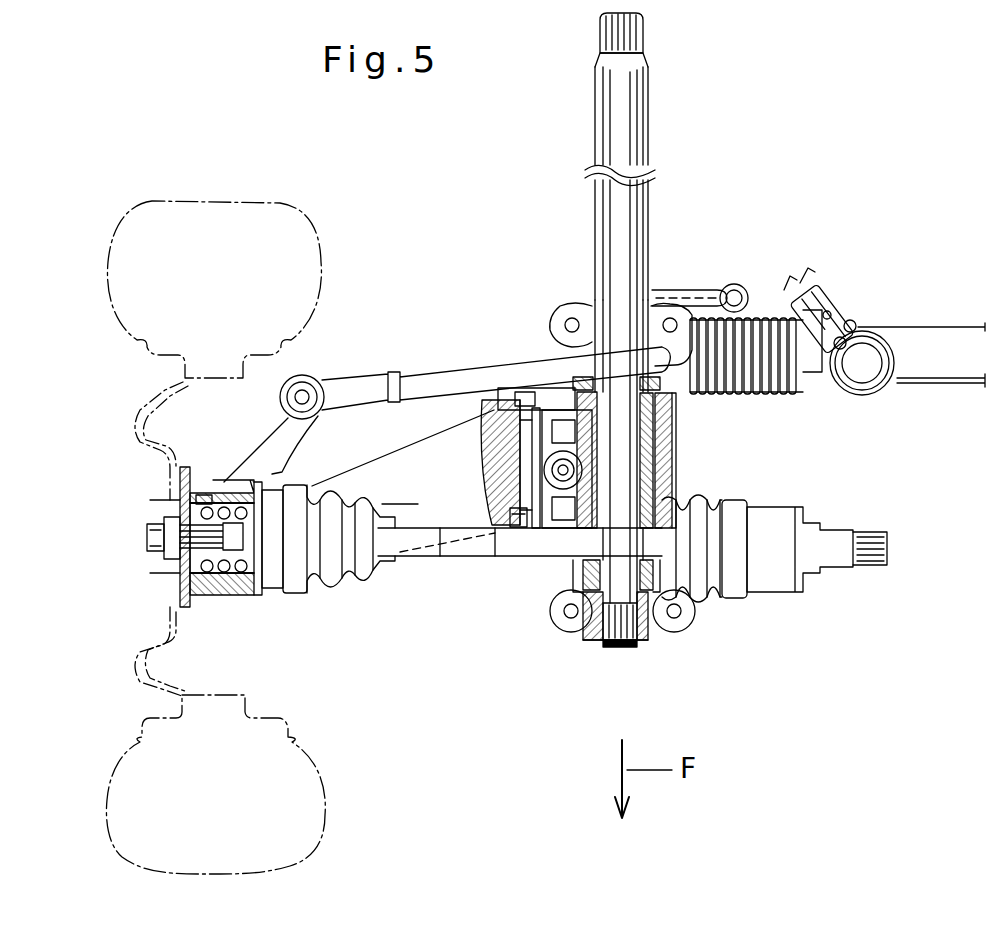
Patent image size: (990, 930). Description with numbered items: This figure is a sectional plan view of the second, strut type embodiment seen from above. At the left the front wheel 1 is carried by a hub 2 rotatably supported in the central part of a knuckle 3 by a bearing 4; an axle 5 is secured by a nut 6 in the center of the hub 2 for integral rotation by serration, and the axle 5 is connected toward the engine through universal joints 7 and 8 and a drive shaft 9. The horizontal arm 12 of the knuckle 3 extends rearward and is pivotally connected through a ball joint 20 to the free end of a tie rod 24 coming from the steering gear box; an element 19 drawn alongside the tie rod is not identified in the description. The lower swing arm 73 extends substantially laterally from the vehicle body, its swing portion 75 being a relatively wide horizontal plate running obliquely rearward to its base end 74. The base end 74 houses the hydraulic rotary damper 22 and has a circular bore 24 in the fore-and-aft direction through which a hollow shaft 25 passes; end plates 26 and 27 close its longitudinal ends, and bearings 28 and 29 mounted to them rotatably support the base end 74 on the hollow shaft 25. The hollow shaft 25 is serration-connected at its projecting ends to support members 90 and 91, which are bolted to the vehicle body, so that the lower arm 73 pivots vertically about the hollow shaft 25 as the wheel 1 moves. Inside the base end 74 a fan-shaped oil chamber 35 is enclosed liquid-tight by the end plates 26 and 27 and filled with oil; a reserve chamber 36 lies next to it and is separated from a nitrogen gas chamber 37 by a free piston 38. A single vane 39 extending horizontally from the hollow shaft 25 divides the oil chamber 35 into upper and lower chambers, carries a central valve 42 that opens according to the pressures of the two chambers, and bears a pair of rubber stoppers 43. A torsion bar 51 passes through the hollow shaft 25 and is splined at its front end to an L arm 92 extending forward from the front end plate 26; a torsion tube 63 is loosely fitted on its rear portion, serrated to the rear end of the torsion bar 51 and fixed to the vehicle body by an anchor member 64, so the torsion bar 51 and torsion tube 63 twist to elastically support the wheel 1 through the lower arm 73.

The front wheel 1 is at (153, 205).
The hub 2 is at (186, 584).
The knuckle 3 is at (222, 481).
The bearing 4 is at (202, 494).
The axle 5 is at (193, 584).
The nut 6 is at (163, 558).
The universal joint 7 is at (301, 594).
The universal joint 8 is at (742, 500).
The drive shaft 9 is at (448, 559).
The horizontal arm 12 is at (258, 450).
The tie rod 19 is at (442, 372).
The ball joint 20 is at (306, 376).
The rotary damper 22 is at (540, 540).
The tie rod 24 is at (885, 330).
The hollow shaft 25 is at (669, 426).
The end plate 26 is at (522, 550).
The end plate 27 is at (503, 388).
The bearing 28 is at (566, 530).
The bearing 29 is at (527, 390).
The oil chamber 35 is at (551, 430).
The reserve chamber 36 is at (509, 505).
The gas chamber 37 is at (520, 449).
The free piston 38 is at (546, 468).
The vane 39 is at (512, 537).
The valve 42 is at (583, 470).
The rubber stoppers 43 is at (497, 388).
The torsion bar 51 is at (652, 212).
The torsion tube 63 is at (650, 142).
The anchor member 64 is at (702, 292).
The lower swing arm 73 is at (356, 455).
The base end 74 is at (673, 443).
The swing portion 75 is at (400, 490).
The support member 90 is at (690, 603).
The support member 91 is at (549, 327).
The L arm 92 is at (572, 633).